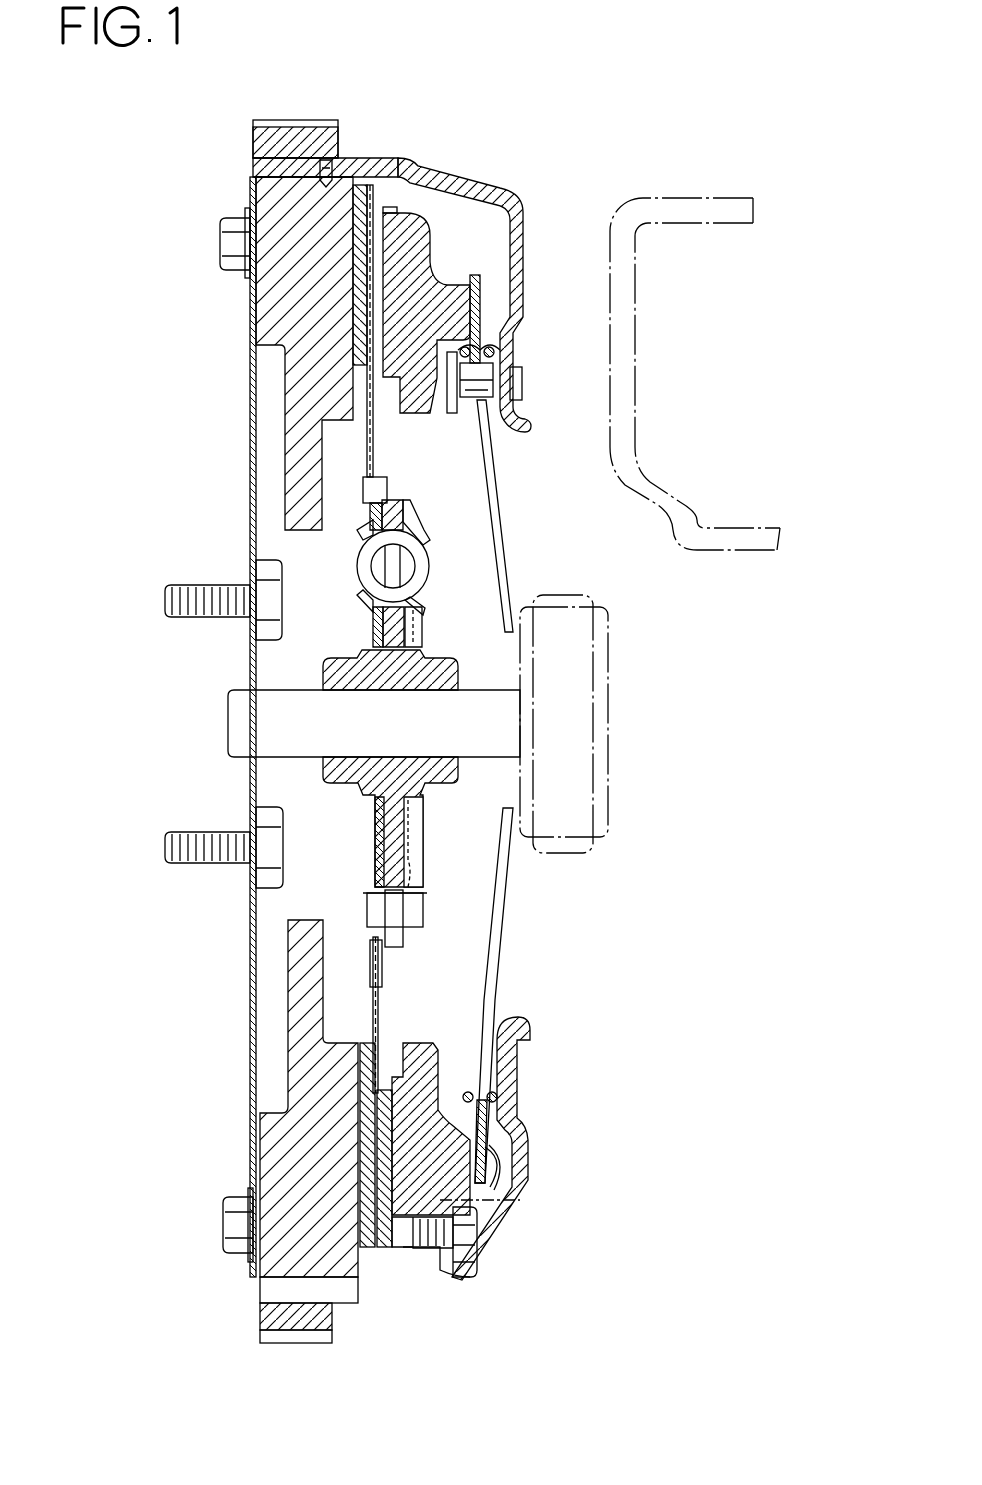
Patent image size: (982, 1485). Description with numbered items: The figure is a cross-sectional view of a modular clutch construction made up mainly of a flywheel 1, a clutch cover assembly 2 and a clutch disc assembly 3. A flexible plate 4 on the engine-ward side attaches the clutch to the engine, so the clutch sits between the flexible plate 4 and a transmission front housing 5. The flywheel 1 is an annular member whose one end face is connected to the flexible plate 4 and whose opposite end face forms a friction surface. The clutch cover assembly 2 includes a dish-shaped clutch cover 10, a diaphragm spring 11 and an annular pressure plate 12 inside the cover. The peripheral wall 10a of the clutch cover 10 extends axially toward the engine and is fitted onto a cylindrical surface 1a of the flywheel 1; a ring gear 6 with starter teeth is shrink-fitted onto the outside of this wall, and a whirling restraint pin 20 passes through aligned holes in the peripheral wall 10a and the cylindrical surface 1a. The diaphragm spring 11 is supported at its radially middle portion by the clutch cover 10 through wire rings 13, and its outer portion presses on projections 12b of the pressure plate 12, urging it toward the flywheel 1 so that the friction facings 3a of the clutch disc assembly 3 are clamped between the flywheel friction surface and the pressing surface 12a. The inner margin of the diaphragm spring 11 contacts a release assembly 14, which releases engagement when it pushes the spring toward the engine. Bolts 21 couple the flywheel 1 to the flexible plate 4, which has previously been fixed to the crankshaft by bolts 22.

The flywheel 1 is at (267, 290).
The cylindrical surface 1a is at (273, 170).
The clutch cover assembly 2 is at (562, 526).
The clutch disc assembly 3 is at (432, 527).
The friction facings 3a is at (370, 375).
The flexible plate 4 is at (250, 330).
The transmission front housing 5 is at (637, 307).
The ring gear 6 is at (267, 135).
The clutch cover 10 is at (513, 243).
The peripheral wall 10a is at (348, 163).
The diaphragm spring 11 is at (500, 483).
The pressure plate 12 is at (450, 293).
The pressing surface 12a is at (427, 360).
The projections 12b is at (485, 290).
The wire rings 13 is at (500, 338).
The release assembly 14 is at (615, 641).
The whirling restraint pin 20 is at (328, 165).
The bolts 21 is at (220, 244).
The bolts 22 is at (205, 605).